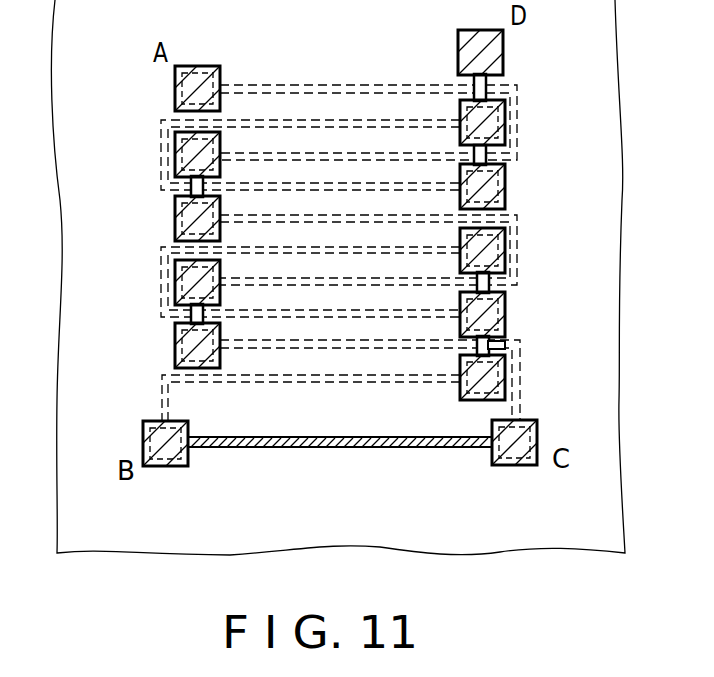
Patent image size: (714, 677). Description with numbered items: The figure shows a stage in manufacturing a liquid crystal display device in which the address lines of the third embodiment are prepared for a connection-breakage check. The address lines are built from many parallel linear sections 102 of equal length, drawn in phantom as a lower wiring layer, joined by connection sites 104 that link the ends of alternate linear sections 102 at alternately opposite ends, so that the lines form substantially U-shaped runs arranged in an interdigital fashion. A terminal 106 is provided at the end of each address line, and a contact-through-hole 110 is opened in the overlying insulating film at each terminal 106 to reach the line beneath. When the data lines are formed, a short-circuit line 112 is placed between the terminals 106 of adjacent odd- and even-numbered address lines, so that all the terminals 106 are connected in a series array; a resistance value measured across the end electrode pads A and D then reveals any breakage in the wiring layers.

The linear section 102 is at (354, 120).
The connection site 104 is at (161, 167).
The terminal 106 is at (198, 66).
The contact-through-hole 110 is at (173, 93).
The short-circuit line 112 is at (504, 345).